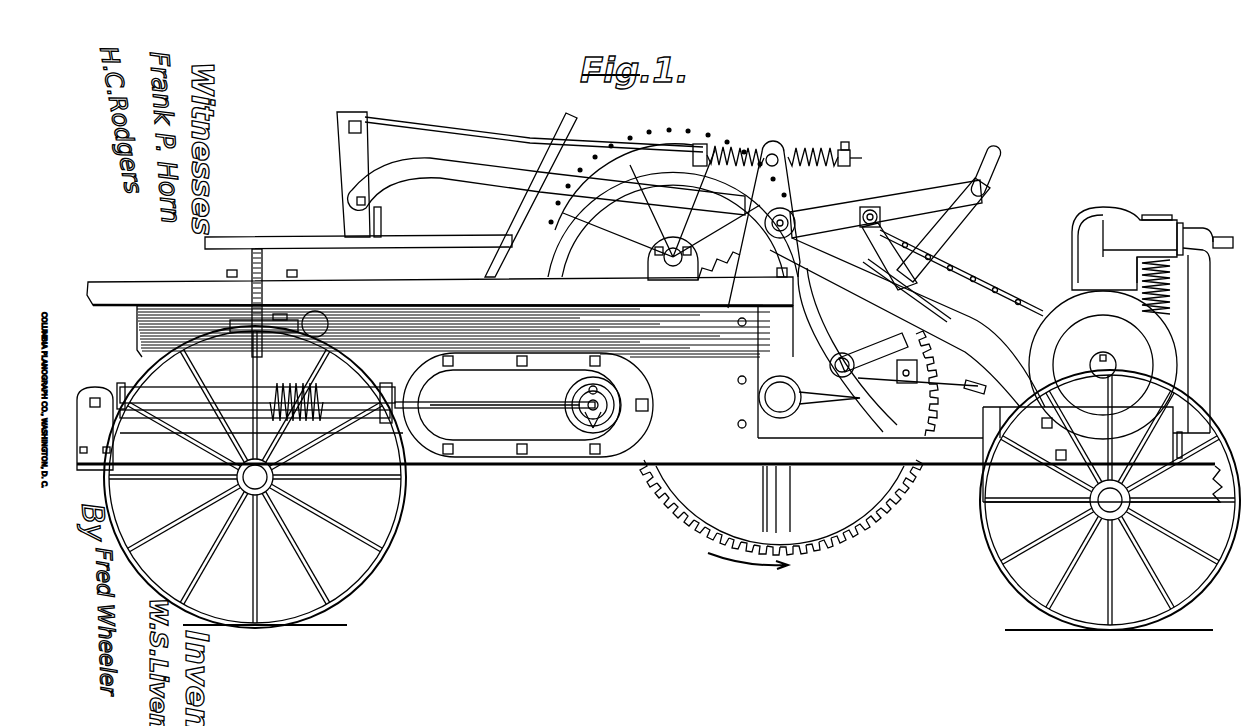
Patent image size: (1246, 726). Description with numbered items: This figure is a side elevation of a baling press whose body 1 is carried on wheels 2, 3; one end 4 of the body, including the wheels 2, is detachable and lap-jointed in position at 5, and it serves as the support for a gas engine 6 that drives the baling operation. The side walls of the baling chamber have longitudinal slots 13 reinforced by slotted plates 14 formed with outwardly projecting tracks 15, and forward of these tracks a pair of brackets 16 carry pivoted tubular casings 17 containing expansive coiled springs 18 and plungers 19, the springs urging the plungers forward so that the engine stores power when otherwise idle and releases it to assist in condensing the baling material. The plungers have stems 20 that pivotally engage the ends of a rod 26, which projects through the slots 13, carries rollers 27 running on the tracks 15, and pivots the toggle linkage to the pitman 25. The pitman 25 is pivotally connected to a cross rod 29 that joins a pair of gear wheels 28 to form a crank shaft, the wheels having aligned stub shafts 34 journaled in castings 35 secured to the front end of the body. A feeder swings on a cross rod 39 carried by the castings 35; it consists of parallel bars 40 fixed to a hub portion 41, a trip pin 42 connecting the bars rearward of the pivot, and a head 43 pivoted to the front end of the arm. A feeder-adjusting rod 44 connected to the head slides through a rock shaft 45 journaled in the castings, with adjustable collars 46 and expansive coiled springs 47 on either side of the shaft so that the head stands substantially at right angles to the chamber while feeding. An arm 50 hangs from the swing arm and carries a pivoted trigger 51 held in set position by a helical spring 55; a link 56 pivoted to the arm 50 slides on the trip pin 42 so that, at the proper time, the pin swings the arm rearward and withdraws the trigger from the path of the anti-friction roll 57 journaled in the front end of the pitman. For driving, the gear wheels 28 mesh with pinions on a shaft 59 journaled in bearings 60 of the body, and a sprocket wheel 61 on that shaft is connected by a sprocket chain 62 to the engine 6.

The body of the baling press 1 is at (641, 466).
The carrying wheels 2 is at (1000, 583).
The carrying wheels 3 is at (356, 577).
The detachable end of the body 4 is at (1015, 467).
The lap joint 5 is at (982, 435).
The gas engine 6 is at (1115, 214).
The longitudinal slots 13 is at (450, 398).
The slotted plates 14 is at (547, 362).
The tracks 15 is at (622, 400).
The brackets 16 is at (93, 387).
The tubular casings 17 is at (244, 390).
The expansive coiled springs 18 is at (312, 398).
The plungers 19 is at (284, 385).
The stems 20 is at (477, 412).
The pitman 25 is at (893, 480).
The rod 26 is at (618, 412).
The rollers 27 is at (572, 430).
The gear wheels 28 is at (822, 550).
The cross rod 29 is at (842, 355).
The stub shafts 34 is at (795, 405).
The castings 35 is at (768, 262).
The cross rod 39 is at (790, 232).
The parallel bars 40 is at (835, 212).
The hub portion 41 is at (612, 203).
The trip pin 42 is at (990, 188).
The head 43 is at (337, 142).
The feeder-adjusting rod 44 is at (470, 125).
The rock shaft 45 is at (778, 150).
The adjustable collars 46 is at (702, 143).
The expansive coiled springs 47 is at (736, 150).
The arm 50 is at (885, 207).
The trigger 51 is at (988, 360).
The helical spring 55 is at (955, 324).
The link 56 is at (992, 152).
The anti-friction roll 57 is at (907, 384).
The shaft 59 is at (682, 255).
The bearings 60 is at (700, 262).
The sprocket wheel 61 is at (675, 132).
The sprocket chain 62 is at (985, 282).